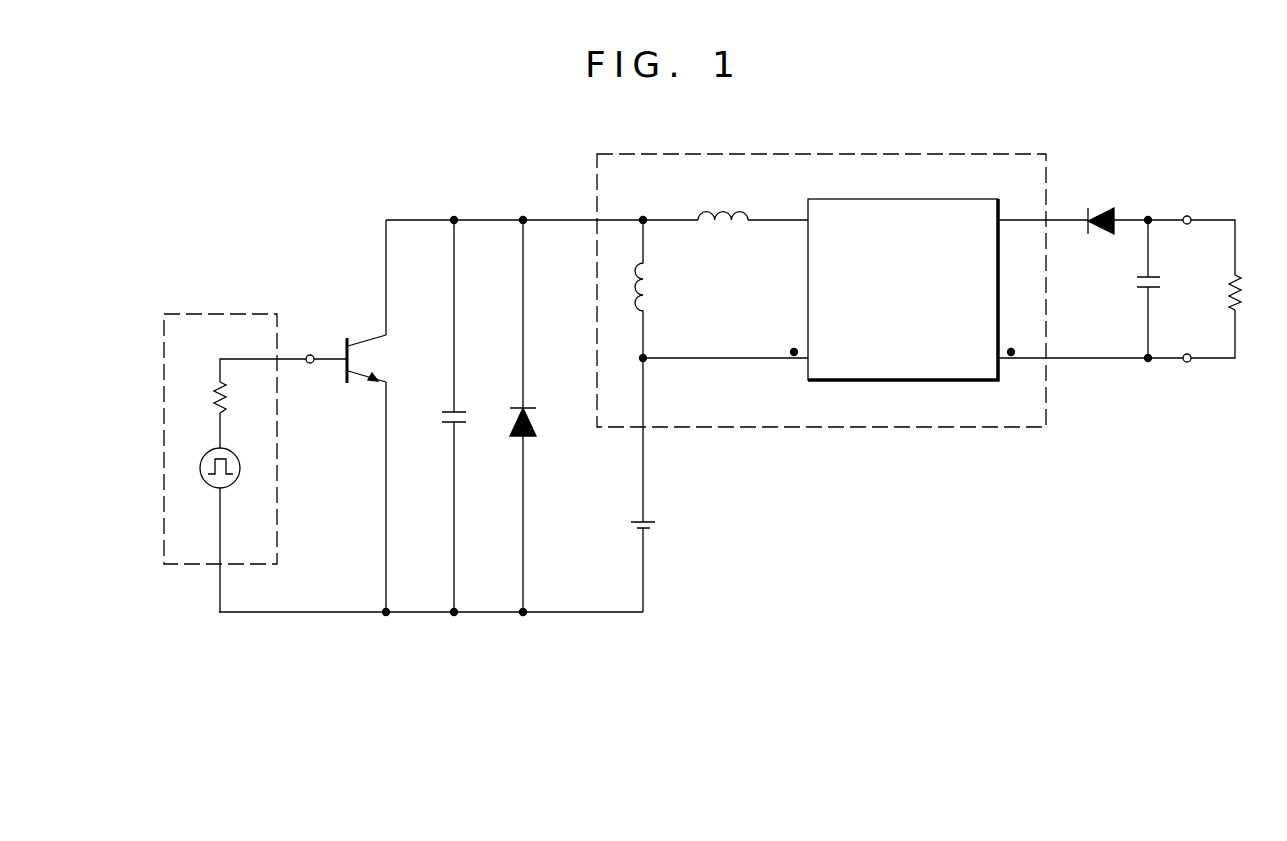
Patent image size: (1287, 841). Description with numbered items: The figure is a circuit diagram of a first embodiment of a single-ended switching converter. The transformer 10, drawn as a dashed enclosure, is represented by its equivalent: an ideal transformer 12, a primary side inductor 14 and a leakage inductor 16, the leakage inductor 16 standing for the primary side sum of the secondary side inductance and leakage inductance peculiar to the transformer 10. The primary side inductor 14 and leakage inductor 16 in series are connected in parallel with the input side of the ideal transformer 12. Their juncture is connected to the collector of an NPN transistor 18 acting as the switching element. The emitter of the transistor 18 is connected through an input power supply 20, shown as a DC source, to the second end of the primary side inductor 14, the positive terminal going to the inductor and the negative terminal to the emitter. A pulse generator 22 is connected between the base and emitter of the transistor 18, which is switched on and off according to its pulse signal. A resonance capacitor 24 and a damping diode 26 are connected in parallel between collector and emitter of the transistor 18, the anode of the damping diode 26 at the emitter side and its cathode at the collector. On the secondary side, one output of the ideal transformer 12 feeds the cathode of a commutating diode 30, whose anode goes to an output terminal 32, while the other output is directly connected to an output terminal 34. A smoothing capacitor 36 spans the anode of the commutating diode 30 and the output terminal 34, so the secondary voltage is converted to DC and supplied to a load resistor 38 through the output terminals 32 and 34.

The transformer 10 is at (804, 152).
The ideal transformer 12 is at (910, 382).
The primary side inductor 14 is at (651, 291).
The leakage inductor 16 is at (727, 214).
The NPN transistor 18 is at (364, 342).
The input power supply 20 is at (656, 526).
The pulse generator 22 is at (277, 533).
The resonance capacitor 24 is at (459, 414).
The damping diode 26 is at (529, 414).
The commutating diode 30 is at (1105, 208).
The output terminal 32 is at (1186, 216).
The output terminal 34 is at (1187, 362).
The smoothing capacitor 36 is at (1157, 285).
The load resistor 38 is at (1241, 291).